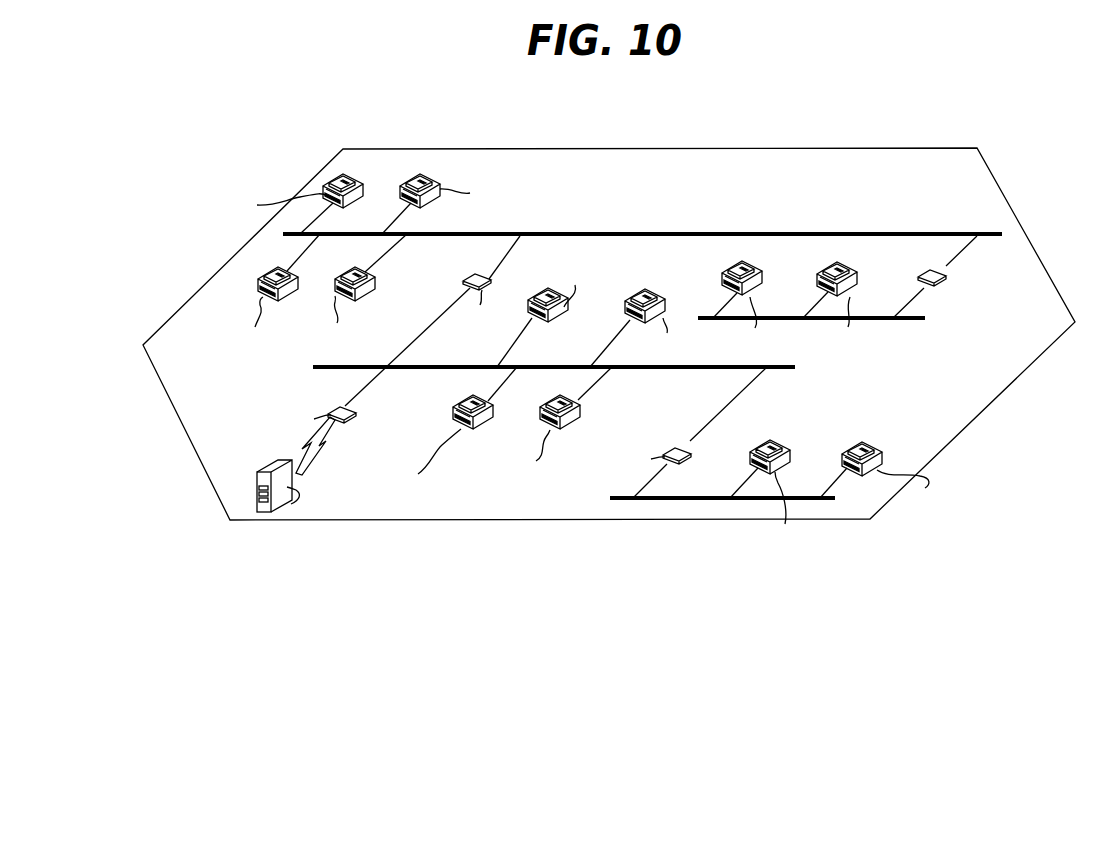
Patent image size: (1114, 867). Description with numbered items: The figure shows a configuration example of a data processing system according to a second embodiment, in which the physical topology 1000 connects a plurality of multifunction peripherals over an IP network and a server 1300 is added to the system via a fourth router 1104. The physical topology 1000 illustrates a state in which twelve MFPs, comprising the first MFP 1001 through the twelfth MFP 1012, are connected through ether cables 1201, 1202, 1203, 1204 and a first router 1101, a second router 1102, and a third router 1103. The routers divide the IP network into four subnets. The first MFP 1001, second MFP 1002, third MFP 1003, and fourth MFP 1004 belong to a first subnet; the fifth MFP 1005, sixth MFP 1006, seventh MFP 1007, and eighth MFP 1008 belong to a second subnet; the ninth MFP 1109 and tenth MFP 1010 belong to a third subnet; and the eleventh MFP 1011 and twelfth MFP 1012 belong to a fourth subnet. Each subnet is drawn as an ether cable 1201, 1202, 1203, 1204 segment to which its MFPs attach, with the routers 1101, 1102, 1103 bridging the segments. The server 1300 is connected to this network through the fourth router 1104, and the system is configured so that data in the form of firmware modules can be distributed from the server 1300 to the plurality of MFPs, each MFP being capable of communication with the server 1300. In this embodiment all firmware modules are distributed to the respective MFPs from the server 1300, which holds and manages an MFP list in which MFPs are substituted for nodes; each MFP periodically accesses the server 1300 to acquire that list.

The physical topology 1000 is at (1012, 211).
The MFP 1 1001 is at (339, 176).
The MFP 2 1002 is at (271, 268).
The MFP 3 1003 is at (414, 176).
The MFP 4 1004 is at (372, 284).
The MFP 5 1005 is at (533, 316).
The MFP 6 1006 is at (632, 317).
The MFP 7 1007 is at (454, 417).
The MFP 8 1008 is at (578, 404).
The MFP9 1109 is at (777, 440).
The MFP 10 1010 is at (872, 443).
The MFP 11 1011 is at (730, 270).
The MFP 12 1012 is at (837, 267).
The router 1 1101 is at (465, 281).
The router 2 1102 is at (921, 278).
The router 3 1103 is at (670, 448).
The router 4 1104 is at (353, 411).
The ether cable 1201 is at (611, 232).
The ether cable 1202 is at (340, 369).
The ether cable 1203 is at (683, 499).
The ether cable 1204 is at (913, 316).
The server 1300 is at (270, 469).